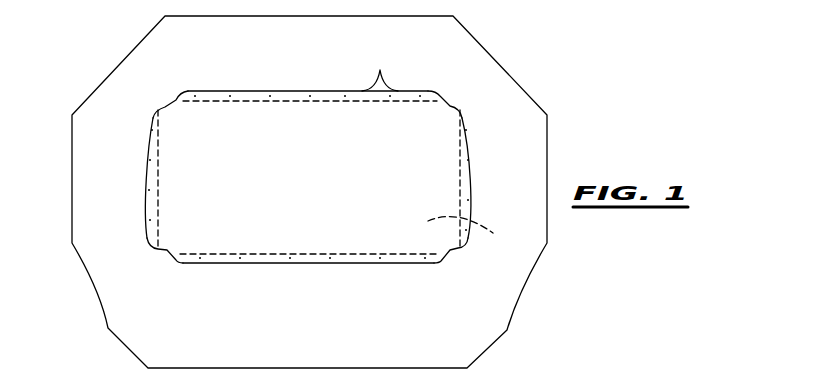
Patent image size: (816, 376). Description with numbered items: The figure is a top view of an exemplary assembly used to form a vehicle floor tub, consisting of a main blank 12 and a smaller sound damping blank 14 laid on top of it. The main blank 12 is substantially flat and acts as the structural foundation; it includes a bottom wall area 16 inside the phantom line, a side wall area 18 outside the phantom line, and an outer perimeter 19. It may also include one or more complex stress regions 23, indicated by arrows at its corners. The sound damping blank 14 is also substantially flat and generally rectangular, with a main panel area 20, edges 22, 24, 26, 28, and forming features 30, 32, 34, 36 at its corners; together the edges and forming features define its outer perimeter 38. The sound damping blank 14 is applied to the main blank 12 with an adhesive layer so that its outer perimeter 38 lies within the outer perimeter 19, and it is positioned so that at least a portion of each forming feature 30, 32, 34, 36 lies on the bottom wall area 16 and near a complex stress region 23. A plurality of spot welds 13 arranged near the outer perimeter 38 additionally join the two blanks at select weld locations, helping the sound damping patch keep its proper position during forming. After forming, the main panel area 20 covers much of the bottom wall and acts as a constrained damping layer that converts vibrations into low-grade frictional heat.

The main blank 12 is at (485, 82).
The spot welds 13 is at (380, 69).
The sound damping blank 14 is at (463, 148).
The bottom wall area 16 is at (475, 232).
The side wall area 18 is at (330, 333).
The outer perimeter 19 is at (72, 143).
The main panel area 20 is at (318, 184).
The edge 22 is at (327, 91).
The complex stress regions 23 is at (153, 108).
The edge 24 is at (150, 143).
The edge 26 is at (271, 263).
The edge 28 is at (474, 188).
The forming feature 30 is at (172, 108).
The forming feature 32 is at (168, 250).
The forming feature 34 is at (452, 252).
The forming feature 36 is at (456, 107).
The outer perimeter 38 is at (249, 91).